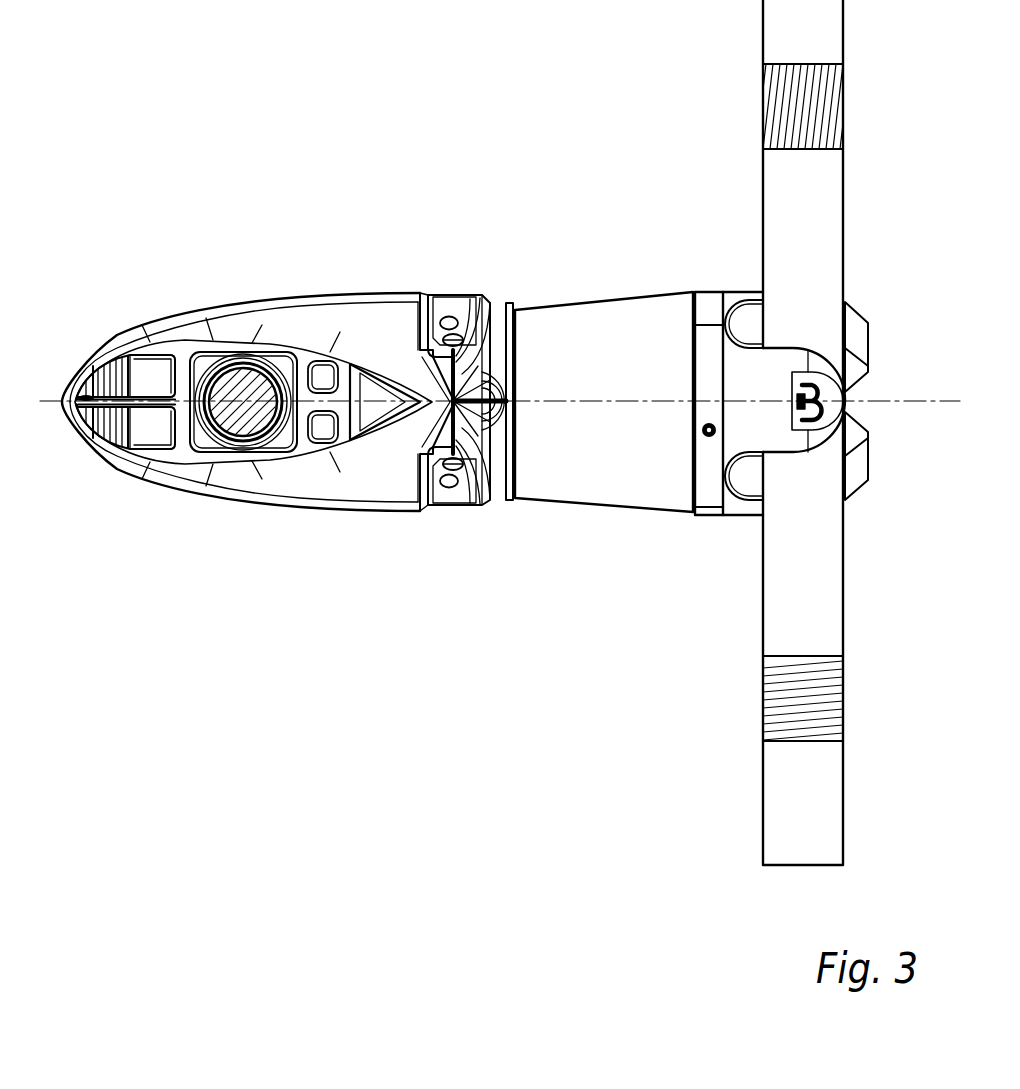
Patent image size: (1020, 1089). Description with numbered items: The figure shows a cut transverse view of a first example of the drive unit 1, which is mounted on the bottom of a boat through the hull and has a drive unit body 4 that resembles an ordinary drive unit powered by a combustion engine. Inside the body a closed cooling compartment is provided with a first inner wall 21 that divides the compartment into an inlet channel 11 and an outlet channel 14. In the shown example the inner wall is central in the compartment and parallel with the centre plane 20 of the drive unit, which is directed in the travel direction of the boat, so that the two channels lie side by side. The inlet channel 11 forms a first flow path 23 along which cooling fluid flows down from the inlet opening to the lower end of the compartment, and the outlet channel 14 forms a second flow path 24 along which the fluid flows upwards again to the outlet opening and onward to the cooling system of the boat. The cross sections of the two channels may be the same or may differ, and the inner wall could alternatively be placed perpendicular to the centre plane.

The drive unit 1 is at (412, 386).
The drive unit body 4 is at (347, 484).
The inlet channel 11 is at (137, 436).
The outlet channel 14 is at (135, 378).
The centre plane 20 is at (905, 405).
The first inner wall 21 is at (116, 443).
The first flow path 23 is at (152, 436).
The second flow path 24 is at (152, 377).